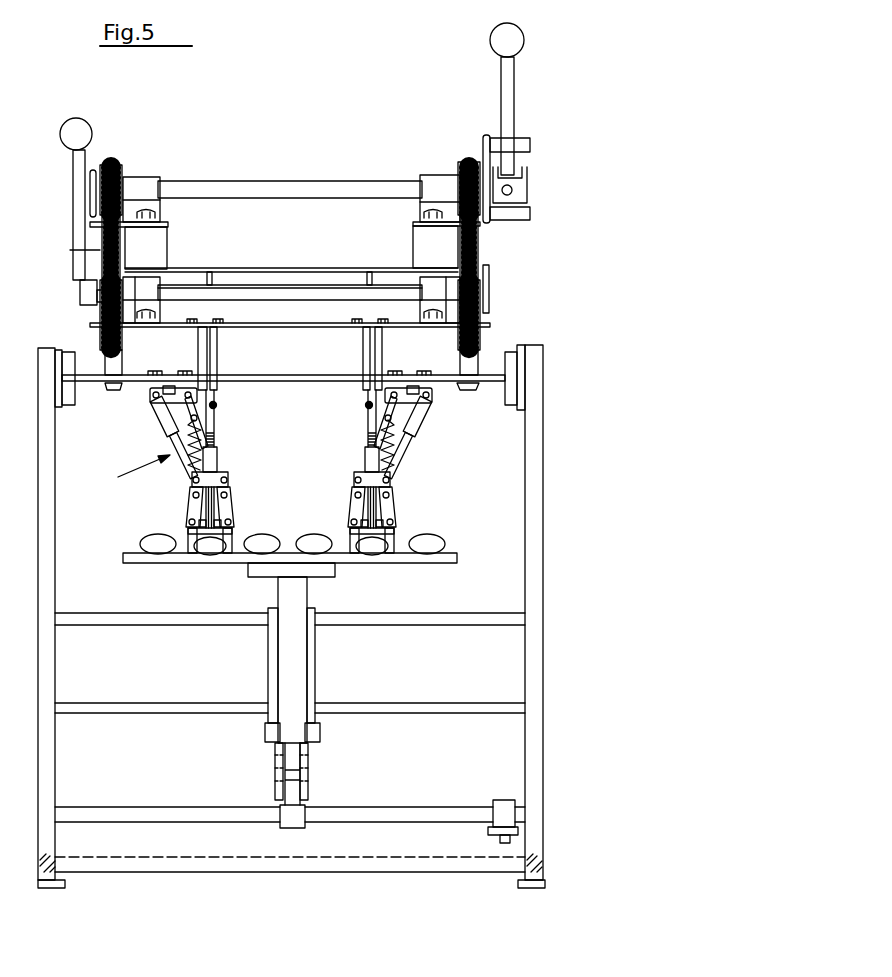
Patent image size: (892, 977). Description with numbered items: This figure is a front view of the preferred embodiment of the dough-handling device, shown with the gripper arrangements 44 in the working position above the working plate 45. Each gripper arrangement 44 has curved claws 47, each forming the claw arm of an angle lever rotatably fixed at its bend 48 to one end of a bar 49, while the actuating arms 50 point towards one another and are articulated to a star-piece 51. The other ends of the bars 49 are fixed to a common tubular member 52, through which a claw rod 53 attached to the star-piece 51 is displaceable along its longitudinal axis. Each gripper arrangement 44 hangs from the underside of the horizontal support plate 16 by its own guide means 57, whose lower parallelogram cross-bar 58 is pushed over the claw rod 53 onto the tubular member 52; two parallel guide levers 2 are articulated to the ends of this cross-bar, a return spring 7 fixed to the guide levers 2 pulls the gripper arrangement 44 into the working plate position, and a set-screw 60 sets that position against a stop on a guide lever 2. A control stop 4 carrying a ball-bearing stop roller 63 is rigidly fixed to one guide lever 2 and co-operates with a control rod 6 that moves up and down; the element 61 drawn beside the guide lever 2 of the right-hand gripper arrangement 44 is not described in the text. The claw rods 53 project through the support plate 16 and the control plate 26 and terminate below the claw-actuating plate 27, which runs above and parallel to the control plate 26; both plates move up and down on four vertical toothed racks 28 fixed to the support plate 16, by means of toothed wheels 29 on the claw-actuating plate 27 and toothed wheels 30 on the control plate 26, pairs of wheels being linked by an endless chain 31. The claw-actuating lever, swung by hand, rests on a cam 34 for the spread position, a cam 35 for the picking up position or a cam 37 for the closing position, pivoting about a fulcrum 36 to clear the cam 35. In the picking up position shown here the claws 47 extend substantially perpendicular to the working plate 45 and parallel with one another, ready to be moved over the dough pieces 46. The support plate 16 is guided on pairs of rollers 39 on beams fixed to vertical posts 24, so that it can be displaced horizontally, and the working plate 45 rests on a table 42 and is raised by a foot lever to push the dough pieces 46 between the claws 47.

The guide lever 2 is at (163, 412).
The control stop 4 is at (221, 419).
The control rod 6 is at (378, 350).
The return spring 7 is at (175, 440).
The support plate 16 is at (240, 378).
The post 24 is at (45, 762).
The control plate 26 is at (333, 326).
The claw-actuating plate 27 is at (347, 270).
The toothed rack 28 is at (70, 250).
The toothed wheel 29 is at (118, 193).
The toothed wheel 30 is at (100, 305).
The endless chain 31 is at (94, 167).
The cam for the spread position 34 is at (512, 216).
The cam for the picking up position 35 is at (533, 145).
The fulcrum 36 is at (517, 188).
The cam for the closing position 37 is at (523, 145).
The roller 39 is at (510, 403).
The table 42 is at (222, 572).
The gripper arrangement 44 is at (168, 520).
The working plate 45 is at (447, 553).
The dough piece 46 is at (427, 550).
The claw 47 is at (391, 533).
The bend 48 is at (422, 518).
The bar 49 is at (391, 500).
The actuating arm 50 is at (358, 531).
The star-piece 51 is at (353, 512).
The tubular member 52 is at (365, 462).
The claw rod 53 is at (367, 422).
The guide means 57 is at (131, 477).
The lower parallelogram cross-bar 58 is at (190, 485).
The set-screw for the working plate position 60 is at (170, 388).
The cylinder 61 is at (404, 418).
The stop roller 63 is at (218, 405).